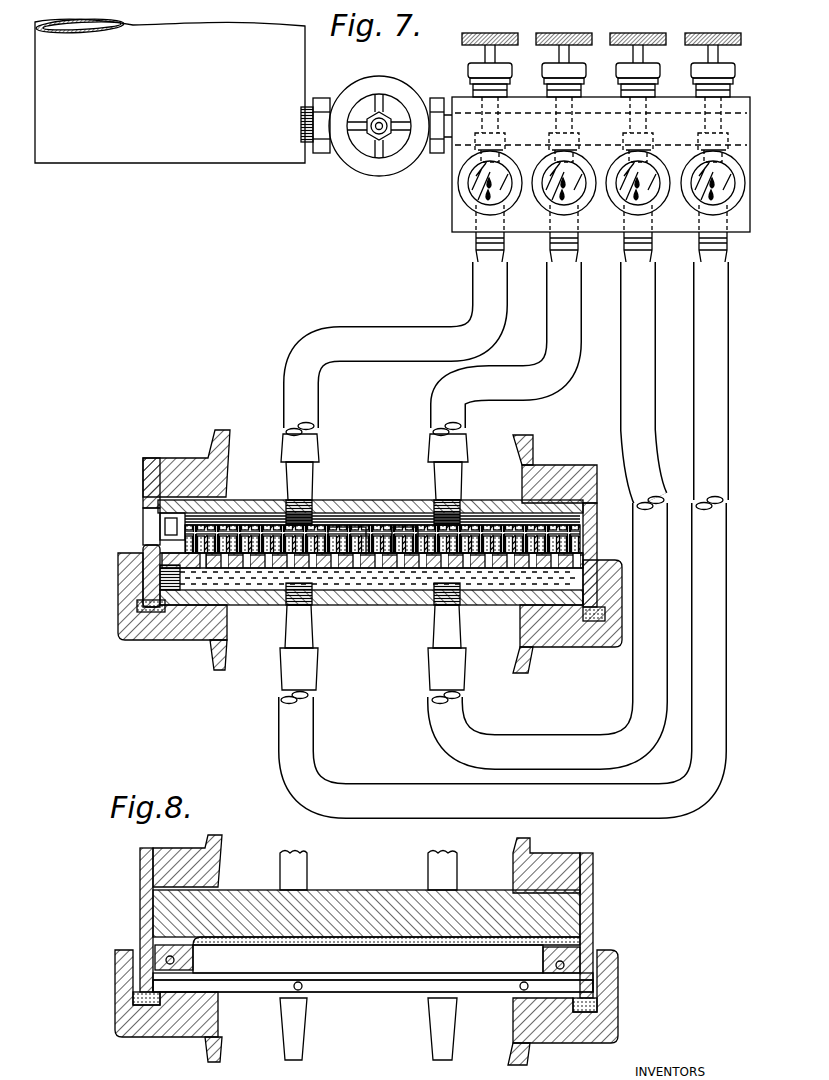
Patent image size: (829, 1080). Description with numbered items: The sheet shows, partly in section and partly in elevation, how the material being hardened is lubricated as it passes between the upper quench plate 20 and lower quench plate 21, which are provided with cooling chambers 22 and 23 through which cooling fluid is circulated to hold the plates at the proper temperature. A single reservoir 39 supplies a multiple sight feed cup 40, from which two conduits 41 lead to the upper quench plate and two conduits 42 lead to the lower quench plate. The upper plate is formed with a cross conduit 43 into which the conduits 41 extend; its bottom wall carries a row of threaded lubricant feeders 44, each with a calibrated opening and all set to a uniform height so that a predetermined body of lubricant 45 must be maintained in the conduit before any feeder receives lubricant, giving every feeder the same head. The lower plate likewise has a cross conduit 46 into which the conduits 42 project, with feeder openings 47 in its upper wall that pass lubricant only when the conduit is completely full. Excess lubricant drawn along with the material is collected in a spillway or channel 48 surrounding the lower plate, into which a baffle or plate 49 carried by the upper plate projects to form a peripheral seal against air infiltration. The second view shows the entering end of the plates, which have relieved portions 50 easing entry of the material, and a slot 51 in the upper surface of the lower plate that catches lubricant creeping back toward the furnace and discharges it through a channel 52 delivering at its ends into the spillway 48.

In FIG. 7, the reservoir 39 is at (243, 96).
In FIG. 7, the multiple sight feed cup 40 is at (452, 207).
In FIG. 7, the conduits 41 is at (478, 301).
In FIG. 7, the conduits 42 is at (645, 312).
In FIG. 7, the cooling chamber 22 is at (218, 440).
In FIG. 7, the cooling chamber 23 is at (222, 665).
In FIG. 7, the upper quench plate 20 is at (472, 506).
In FIG. 8, the upper quench plate 20 is at (246, 882).
In FIG. 7, the lower quench plate 21 is at (503, 605).
In FIG. 8, the lower quench plate 21 is at (255, 995).
In FIG. 7, the body of lubricant 45 is at (234, 526).
In FIG. 7, the lubricant feeder 44 is at (344, 536).
In FIG. 7, the cross conduit 43 is at (402, 526).
In FIG. 7, the feeder openings 47 is at (400, 568).
In FIG. 7, the cross conduit 46 is at (350, 578).
In FIG. 7, the baffle or plate 49 is at (147, 551).
In FIG. 8, the baffle or plate 49 is at (594, 926).
In FIG. 7, the spillway or channel 48 is at (152, 612).
In FIG. 8, the spillway or channel 48 is at (148, 1006).
In FIG. 8, the relieved portions 50 is at (340, 937).
In FIG. 8, the slot 51 is at (498, 965).
In FIG. 8, the channel 52 is at (417, 990).